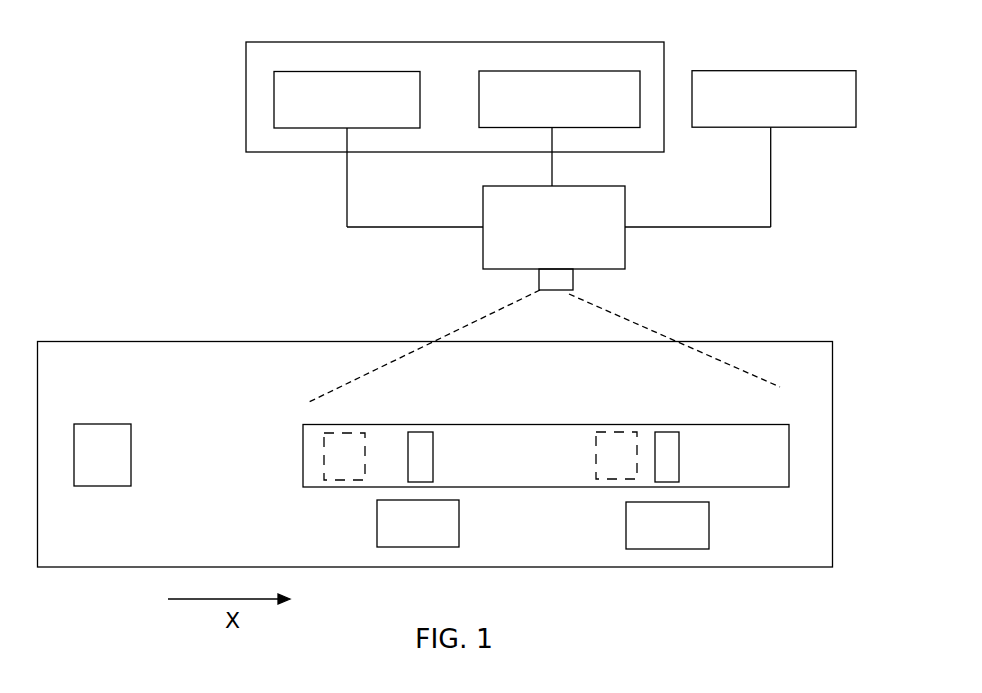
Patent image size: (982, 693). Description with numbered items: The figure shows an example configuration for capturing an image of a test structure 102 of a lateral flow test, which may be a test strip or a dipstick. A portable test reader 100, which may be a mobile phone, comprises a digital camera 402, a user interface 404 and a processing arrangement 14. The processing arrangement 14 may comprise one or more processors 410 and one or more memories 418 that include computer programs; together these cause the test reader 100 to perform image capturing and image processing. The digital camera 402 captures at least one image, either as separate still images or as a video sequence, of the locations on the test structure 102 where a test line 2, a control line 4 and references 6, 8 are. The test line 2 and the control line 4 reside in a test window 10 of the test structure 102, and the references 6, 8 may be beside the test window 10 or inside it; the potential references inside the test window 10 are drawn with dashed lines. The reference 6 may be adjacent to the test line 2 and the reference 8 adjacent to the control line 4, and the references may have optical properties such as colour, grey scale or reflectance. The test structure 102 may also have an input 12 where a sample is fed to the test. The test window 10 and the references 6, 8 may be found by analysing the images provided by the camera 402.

The portable test reader 100 is at (165, 79).
The processing arrangement 14 is at (543, 41).
The memory 418 is at (314, 100).
The processor 410 is at (521, 100).
The user interface 404 is at (756, 70).
The digital camera 402 is at (617, 185).
The test structure 102 is at (767, 340).
The test window 10 is at (740, 423).
The input 12 is at (116, 465).
The reference 6 is at (355, 466).
The test line 2 is at (427, 466).
The reference 8 is at (624, 465).
The control line 4 is at (673, 466).